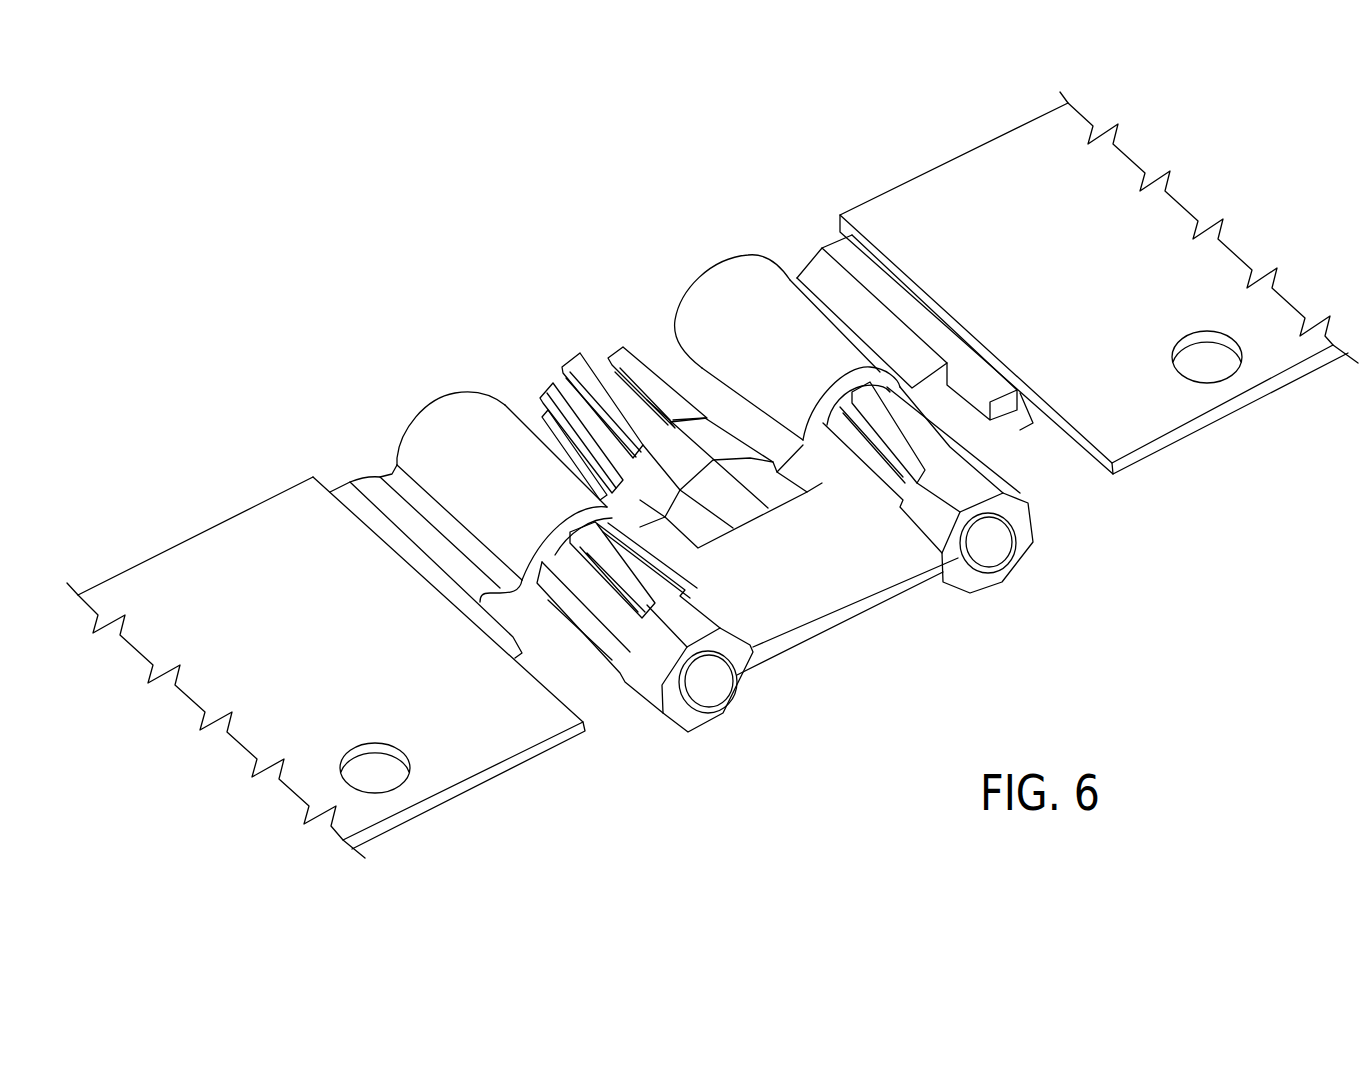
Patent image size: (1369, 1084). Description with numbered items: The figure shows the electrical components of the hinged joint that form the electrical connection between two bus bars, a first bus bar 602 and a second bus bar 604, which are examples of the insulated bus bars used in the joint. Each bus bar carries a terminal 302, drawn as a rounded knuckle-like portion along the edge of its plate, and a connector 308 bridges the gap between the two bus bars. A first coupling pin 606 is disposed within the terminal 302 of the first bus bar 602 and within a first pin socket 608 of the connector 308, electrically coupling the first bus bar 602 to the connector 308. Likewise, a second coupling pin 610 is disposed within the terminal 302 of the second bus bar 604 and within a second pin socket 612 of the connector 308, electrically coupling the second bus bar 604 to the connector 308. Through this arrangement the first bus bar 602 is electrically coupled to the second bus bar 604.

The terminal 302 is at (448, 395).
The connector 308 is at (845, 613).
The first bus bar 602 is at (960, 157).
The second bus bar 604 is at (185, 538).
The first coupling pin 606 is at (997, 552).
The first pin socket 608 is at (958, 437).
The second coupling pin 610 is at (713, 692).
The second pin socket 612 is at (573, 622).